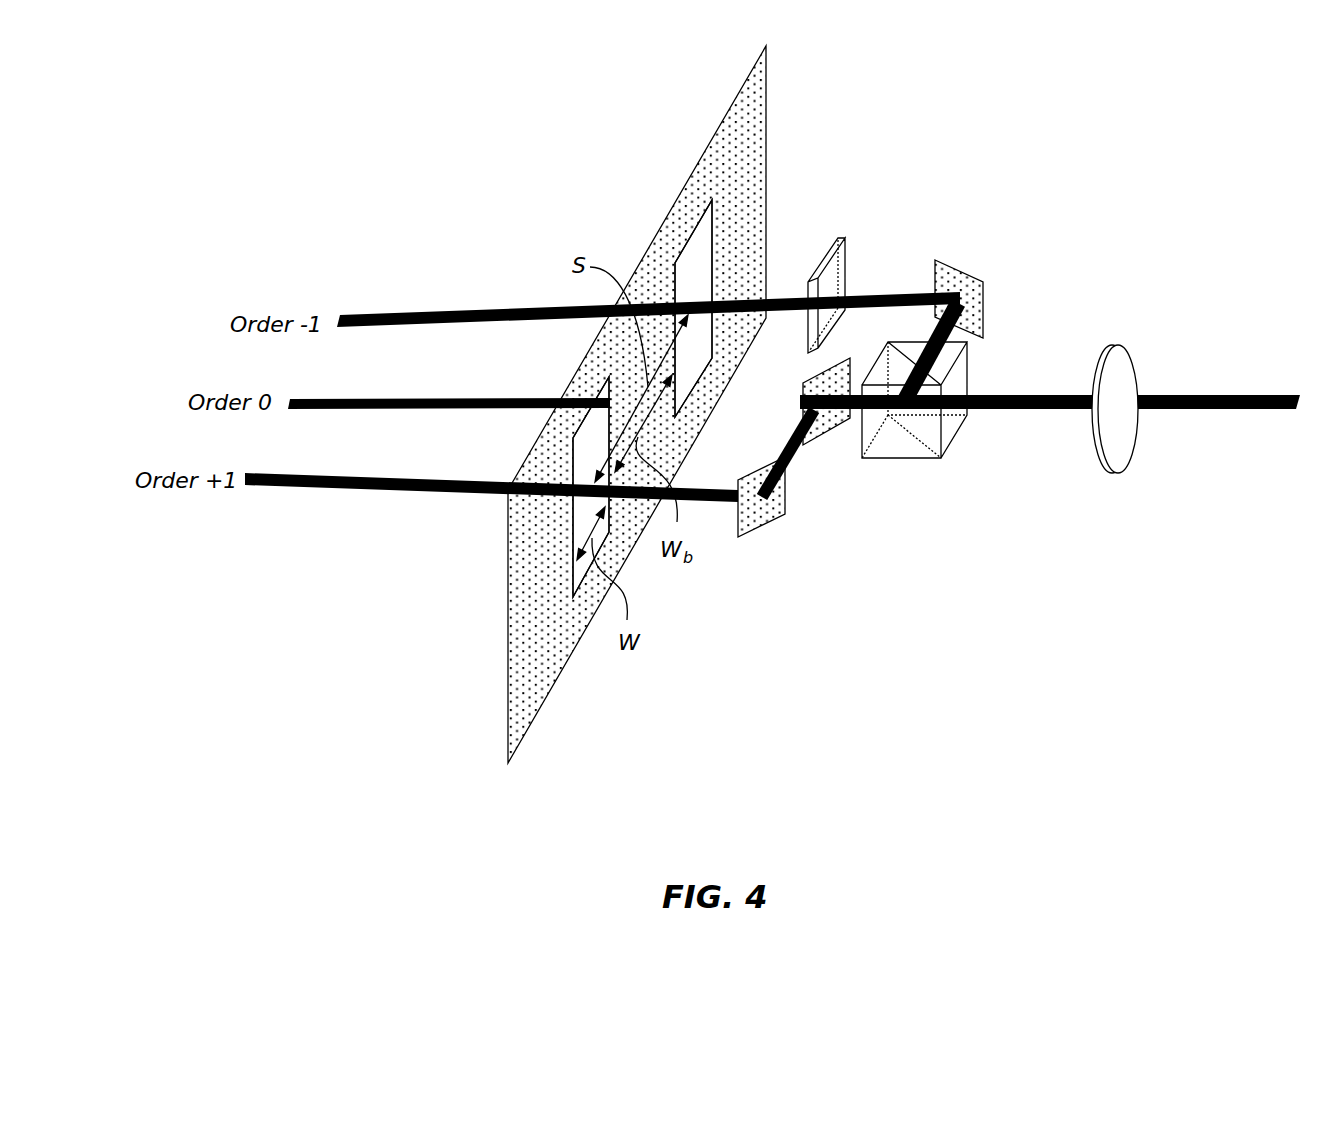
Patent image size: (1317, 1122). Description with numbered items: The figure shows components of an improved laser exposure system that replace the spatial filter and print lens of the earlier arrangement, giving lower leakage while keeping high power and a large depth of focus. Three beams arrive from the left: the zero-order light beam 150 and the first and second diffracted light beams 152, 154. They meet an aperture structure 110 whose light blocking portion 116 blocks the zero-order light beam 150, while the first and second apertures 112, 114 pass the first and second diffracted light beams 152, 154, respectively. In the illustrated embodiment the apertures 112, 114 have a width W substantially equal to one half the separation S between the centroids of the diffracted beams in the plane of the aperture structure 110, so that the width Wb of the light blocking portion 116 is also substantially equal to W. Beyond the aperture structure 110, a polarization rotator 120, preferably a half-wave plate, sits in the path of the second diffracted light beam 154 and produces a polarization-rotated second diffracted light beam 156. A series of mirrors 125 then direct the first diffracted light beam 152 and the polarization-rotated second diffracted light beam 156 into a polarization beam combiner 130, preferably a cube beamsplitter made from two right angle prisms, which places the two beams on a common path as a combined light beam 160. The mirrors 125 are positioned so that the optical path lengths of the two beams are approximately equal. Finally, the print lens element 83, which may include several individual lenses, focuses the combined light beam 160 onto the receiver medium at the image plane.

The aperture structure 110 is at (747, 78).
The first aperture 112 is at (587, 513).
The second aperture 114 is at (702, 263).
The light blocking portion 116 is at (655, 442).
The polarization rotator 120 is at (820, 268).
The mirrors 125 is at (962, 270).
The polarization beam combiner 130 is at (913, 458).
The zero-order light beam 150 is at (420, 407).
The first diffracted light beam 152 is at (322, 485).
The second diffracted light beam 154 is at (478, 313).
The polarization-rotated second diffracted light beam 156 is at (887, 297).
The combined light beam 160 is at (1010, 393).
The print lens element 83 is at (1110, 347).